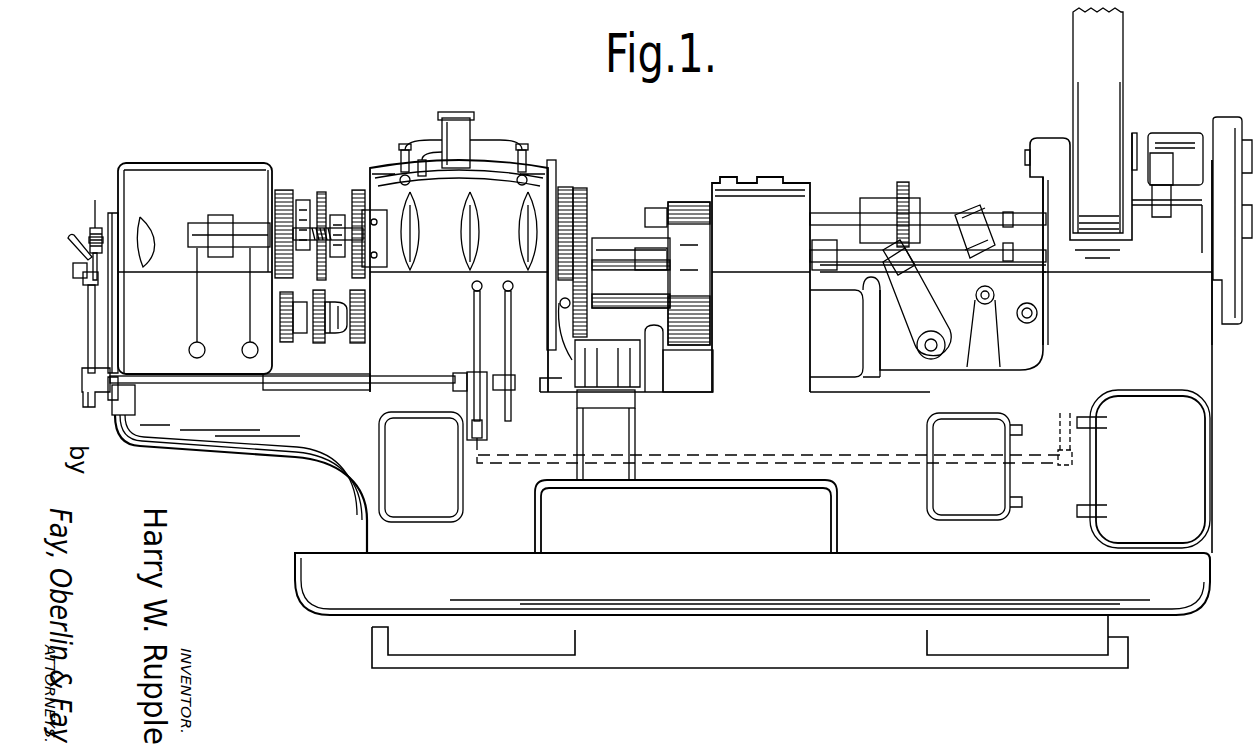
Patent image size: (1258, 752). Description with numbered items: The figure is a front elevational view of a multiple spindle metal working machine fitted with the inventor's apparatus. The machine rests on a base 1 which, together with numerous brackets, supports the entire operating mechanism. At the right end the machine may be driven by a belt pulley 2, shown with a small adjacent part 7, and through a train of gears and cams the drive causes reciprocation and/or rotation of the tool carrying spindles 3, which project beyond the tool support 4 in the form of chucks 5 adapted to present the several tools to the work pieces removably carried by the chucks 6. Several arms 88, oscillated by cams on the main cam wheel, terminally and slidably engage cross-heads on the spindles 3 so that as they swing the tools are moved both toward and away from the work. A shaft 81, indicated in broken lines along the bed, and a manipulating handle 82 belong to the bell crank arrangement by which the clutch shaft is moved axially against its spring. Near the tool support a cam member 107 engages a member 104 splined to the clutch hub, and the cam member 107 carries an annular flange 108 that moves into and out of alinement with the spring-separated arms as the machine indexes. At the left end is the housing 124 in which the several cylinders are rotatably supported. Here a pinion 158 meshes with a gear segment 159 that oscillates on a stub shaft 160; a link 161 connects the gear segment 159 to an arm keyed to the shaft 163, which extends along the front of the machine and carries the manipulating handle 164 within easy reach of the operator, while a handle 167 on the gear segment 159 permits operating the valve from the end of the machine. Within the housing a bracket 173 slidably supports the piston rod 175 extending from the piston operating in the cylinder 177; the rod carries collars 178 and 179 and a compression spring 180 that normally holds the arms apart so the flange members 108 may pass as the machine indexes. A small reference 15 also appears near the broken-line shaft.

The base 1 is at (662, 414).
The belt pulley 2 is at (1115, 101).
The tool carrying spindles 3 is at (845, 252).
The tool support 4 is at (690, 215).
The chucks 5 is at (645, 248).
The chucks 6 is at (583, 225).
The hand wheel knob 7 is at (1143, 145).
The guide 15 is at (1068, 432).
The shaft 81 is at (730, 460).
The manipulating handle 82 is at (473, 325).
The arms 88 is at (978, 225).
The member 104 is at (359, 190).
The cam member 107 is at (336, 333).
The annular flange 108 is at (321, 192).
The housing 124 is at (146, 178).
The pinion 158 is at (95, 226).
The gear segment 159 is at (89, 238).
The stub shaft 160 is at (76, 274).
The link 161 is at (89, 340).
The shaft 163 is at (298, 390).
The manipulating handle 164 is at (512, 333).
The handle 167 is at (72, 250).
The bracket 173 is at (338, 258).
The piston rod 175 is at (283, 190).
The cylinder 177 is at (246, 228).
The collar 178 is at (364, 265).
The collar 179 is at (302, 200).
The compression spring 180 is at (330, 258).